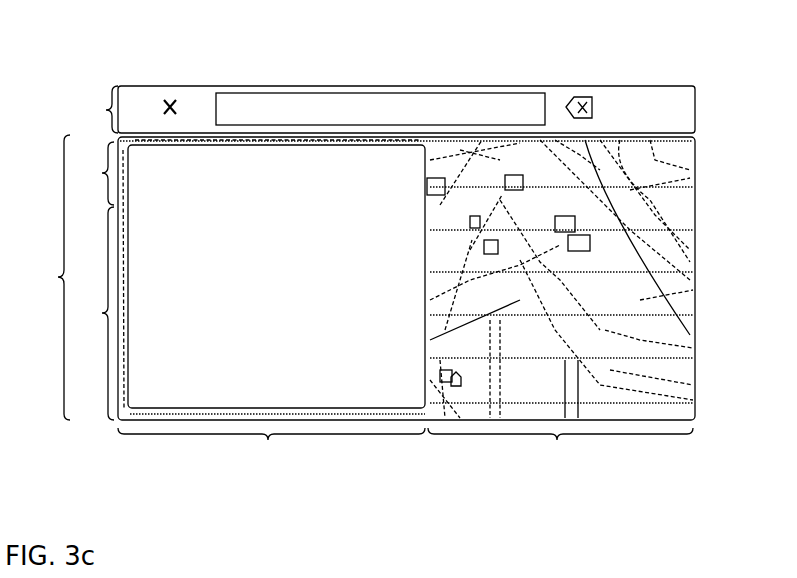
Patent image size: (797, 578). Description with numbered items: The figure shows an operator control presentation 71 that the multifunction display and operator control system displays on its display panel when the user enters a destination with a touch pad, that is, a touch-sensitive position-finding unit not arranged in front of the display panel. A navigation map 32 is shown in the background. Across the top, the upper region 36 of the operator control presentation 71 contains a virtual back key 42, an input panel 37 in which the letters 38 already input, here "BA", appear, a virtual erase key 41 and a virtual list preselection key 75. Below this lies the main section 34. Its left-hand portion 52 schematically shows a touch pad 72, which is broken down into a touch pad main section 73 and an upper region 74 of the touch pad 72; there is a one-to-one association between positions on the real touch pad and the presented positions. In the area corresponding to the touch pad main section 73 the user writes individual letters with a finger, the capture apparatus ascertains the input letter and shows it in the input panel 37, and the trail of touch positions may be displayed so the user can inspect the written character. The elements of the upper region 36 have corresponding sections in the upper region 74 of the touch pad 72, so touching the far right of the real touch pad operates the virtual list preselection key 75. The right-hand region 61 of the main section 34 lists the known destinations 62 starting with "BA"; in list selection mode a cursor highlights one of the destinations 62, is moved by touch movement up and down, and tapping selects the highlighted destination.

The operator control presentation 71 is at (100, 452).
The upper region 36 is at (96, 109).
The virtual back key 42 is at (169, 102).
The input panel 37 is at (392, 104).
The letters 38 is at (228, 101).
The virtual erase key 41 is at (569, 96).
The virtual list preselection key 75 is at (660, 98).
The main section 34 is at (49, 277).
The upper region of the touch pad 74 is at (95, 173).
The touch pad main section 73 is at (95, 313).
The navigation map 32 is at (642, 350).
The known destinations 62 is at (563, 167).
The touch pad 72 is at (365, 406).
The left-hand portion 52 is at (271, 450).
The right-hand region 61 is at (560, 450).